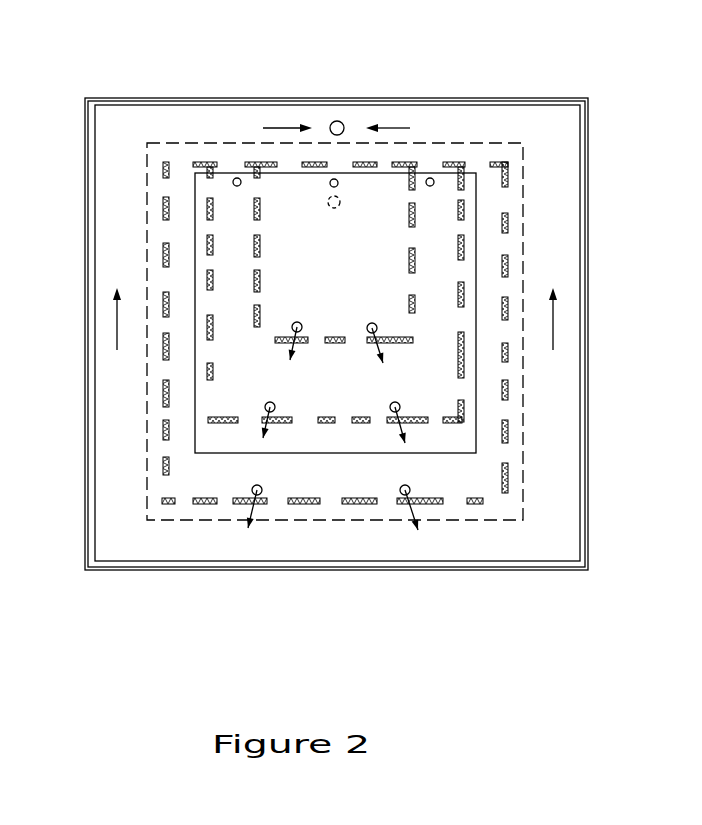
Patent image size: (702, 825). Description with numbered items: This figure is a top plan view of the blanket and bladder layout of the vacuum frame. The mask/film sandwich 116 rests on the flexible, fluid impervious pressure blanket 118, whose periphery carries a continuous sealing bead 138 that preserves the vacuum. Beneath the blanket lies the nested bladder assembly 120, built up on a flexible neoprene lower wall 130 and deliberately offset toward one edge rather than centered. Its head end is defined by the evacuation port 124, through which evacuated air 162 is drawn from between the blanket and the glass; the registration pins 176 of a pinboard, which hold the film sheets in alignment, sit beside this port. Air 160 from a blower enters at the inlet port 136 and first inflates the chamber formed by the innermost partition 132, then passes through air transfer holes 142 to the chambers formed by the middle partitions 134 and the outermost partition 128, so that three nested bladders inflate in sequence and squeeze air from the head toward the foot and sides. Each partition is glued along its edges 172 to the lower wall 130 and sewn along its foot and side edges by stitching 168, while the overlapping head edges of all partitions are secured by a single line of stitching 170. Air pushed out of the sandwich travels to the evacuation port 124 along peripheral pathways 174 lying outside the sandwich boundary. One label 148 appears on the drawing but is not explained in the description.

The mask/film sandwich 116 is at (197, 255).
The pressure blanket 118 is at (585, 392).
The nested bladder assembly 120 is at (355, 267).
The evacuation port 124 is at (337, 121).
The outermost partition 128 is at (180, 482).
The lower wall 130 is at (523, 233).
The innermost partition 132 is at (270, 215).
The middle partitions 134 is at (225, 378).
The inlet port 136 is at (340, 202).
The sealing bead 138 is at (585, 170).
The air transfer holes 142 is at (299, 322).
The nozzle 148 is at (410, 490).
The air 160 is at (294, 354).
The evacuated air 162 is at (283, 125).
The stitching 168 is at (507, 478).
The head edge stitching 170 is at (258, 162).
The partition edges 172 is at (457, 362).
The peripheral pathways 174 is at (556, 325).
The registration pins 176 is at (234, 179).